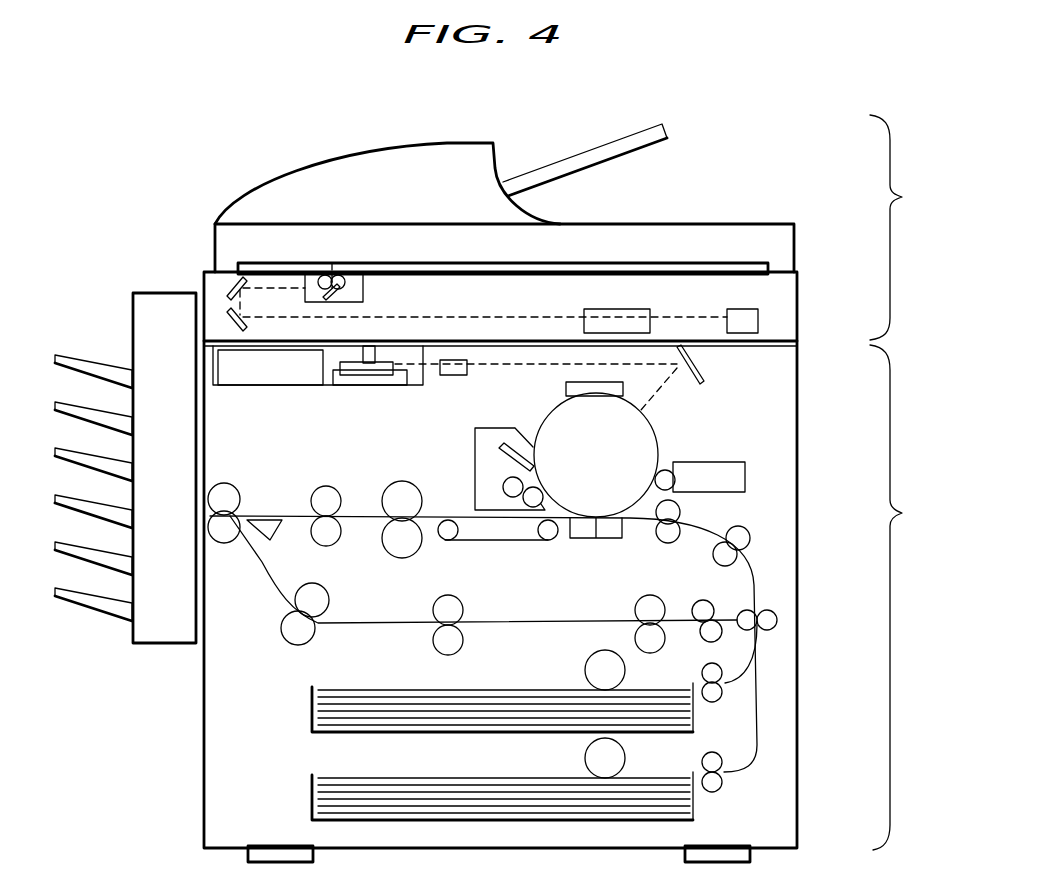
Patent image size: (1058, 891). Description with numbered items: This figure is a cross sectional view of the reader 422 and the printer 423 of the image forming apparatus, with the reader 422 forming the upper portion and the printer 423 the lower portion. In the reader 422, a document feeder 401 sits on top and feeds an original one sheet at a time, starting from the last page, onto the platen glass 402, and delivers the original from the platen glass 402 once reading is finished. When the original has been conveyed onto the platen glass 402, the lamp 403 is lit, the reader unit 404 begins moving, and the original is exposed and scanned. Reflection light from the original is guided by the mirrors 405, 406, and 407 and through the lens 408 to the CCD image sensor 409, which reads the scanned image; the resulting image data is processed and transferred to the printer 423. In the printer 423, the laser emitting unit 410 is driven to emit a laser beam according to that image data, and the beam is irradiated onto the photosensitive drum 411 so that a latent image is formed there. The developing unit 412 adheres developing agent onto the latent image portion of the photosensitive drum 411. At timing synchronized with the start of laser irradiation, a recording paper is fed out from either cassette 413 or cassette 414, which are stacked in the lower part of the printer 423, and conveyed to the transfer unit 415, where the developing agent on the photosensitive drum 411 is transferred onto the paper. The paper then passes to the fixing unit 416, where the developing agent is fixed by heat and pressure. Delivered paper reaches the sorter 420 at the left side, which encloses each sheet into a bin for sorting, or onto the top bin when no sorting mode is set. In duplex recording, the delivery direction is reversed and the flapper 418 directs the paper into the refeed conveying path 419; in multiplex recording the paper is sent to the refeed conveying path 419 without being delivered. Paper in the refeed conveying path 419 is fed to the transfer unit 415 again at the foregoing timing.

The document feeder 401 is at (343, 161).
The platen glass 402 is at (713, 267).
The lamp 403 is at (331, 277).
The reader unit 404 is at (364, 295).
The mirror 405 is at (336, 296).
The mirror 406 is at (232, 284).
The mirror 407 is at (230, 314).
The lens 408 is at (628, 317).
The CCD image sensor 409 is at (762, 311).
The laser emitting unit 410 is at (253, 382).
The photosensitive drum 411 is at (643, 446).
The developing unit 412 is at (738, 476).
The cassette 413 is at (697, 715).
The cassette 414 is at (697, 803).
The transfer unit 415 is at (588, 540).
The fixing unit 416 is at (385, 535).
The flapper 418 is at (260, 548).
The refeed conveying path 419 is at (384, 628).
The sorter 420 is at (156, 645).
The reader 422 is at (909, 227).
The printer 423 is at (909, 597).